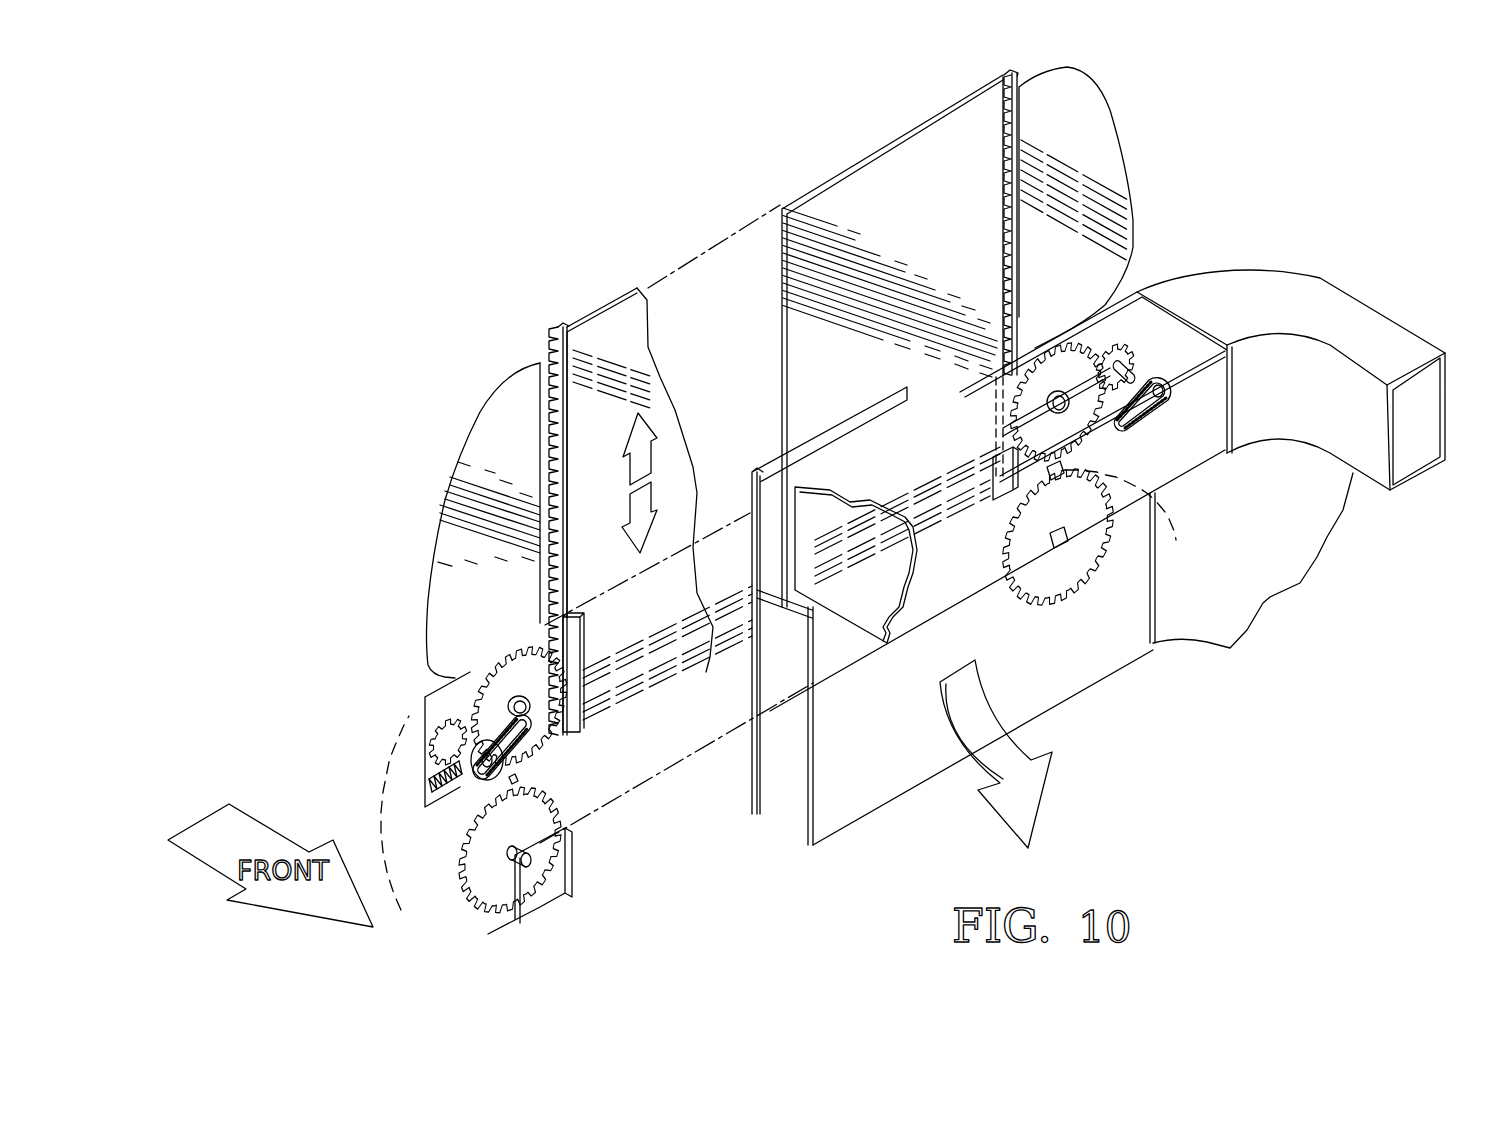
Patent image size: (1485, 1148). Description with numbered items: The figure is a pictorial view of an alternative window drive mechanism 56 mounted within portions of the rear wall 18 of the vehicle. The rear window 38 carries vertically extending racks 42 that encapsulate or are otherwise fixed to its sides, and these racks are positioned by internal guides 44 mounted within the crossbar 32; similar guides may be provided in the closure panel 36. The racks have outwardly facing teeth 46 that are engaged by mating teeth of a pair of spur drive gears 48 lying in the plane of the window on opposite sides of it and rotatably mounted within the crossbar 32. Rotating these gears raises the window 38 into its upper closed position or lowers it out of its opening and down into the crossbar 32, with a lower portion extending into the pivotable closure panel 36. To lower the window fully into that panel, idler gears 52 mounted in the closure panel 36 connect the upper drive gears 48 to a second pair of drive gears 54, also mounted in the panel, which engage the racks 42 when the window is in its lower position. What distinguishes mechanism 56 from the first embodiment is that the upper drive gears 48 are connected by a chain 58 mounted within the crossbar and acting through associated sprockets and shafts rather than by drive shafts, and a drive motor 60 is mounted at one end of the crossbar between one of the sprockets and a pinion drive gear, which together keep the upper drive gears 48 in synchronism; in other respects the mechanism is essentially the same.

The rear wall 18 is at (1205, 302).
The crossbar 32 is at (1207, 437).
The closure panel 36 is at (1052, 685).
The rear window 38 is at (852, 195).
The racks 42 is at (1007, 170).
The internal guides 44 is at (577, 655).
The teeth 46 is at (1007, 240).
The spur drive gears 48 is at (1080, 363).
The idler gears 52 is at (1177, 541).
The second drive gears 54 is at (1080, 567).
The window drive mechanism 56 is at (1150, 354).
The chain 58 is at (440, 736).
The drive motor 60 is at (457, 743).